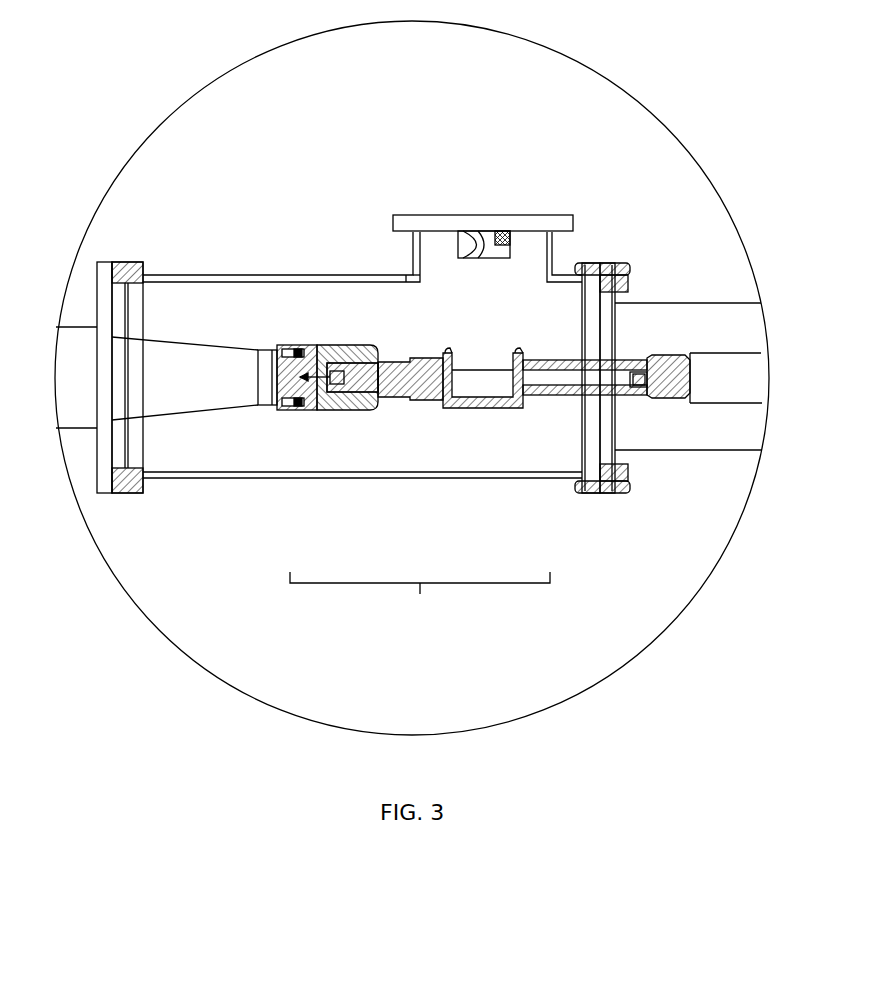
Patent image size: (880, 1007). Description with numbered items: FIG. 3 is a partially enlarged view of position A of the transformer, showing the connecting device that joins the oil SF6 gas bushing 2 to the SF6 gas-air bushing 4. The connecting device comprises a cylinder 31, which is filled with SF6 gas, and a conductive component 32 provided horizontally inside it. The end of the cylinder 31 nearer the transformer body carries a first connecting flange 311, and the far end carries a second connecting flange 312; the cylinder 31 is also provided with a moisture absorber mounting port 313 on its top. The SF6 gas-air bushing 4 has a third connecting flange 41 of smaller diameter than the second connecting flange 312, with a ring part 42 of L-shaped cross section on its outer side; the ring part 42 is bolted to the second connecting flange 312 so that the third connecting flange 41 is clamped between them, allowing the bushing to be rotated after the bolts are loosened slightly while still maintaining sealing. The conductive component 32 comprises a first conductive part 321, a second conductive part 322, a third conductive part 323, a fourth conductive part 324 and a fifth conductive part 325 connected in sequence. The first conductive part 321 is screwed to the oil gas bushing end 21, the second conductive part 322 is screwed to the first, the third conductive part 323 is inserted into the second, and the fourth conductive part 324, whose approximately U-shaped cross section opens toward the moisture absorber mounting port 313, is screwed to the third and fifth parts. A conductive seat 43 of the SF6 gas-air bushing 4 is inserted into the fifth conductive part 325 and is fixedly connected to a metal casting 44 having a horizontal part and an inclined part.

The position A is at (190, 98).
The oil SF6 gas bushing 2 is at (75, 335).
The oil gas bushing end 21 is at (263, 410).
The cylinder 31 is at (249, 275).
The first connecting flange 311 is at (145, 262).
The second connecting flange 312 is at (610, 263).
The moisture absorber mounting port 313 is at (460, 215).
The conductive component 32 is at (420, 609).
The first conductive part 321 is at (305, 410).
The second conductive part 322 is at (355, 410).
The third conductive part 323 is at (410, 410).
The fourth conductive part 324 is at (480, 410).
The fifth conductive part 325 is at (545, 410).
The SF6 gas-air bushing 4 is at (710, 313).
The third connecting flange 41 is at (605, 453).
The ring part 42 is at (615, 470).
The conductive seat 43 is at (668, 410).
The metal casting 44 is at (706, 410).